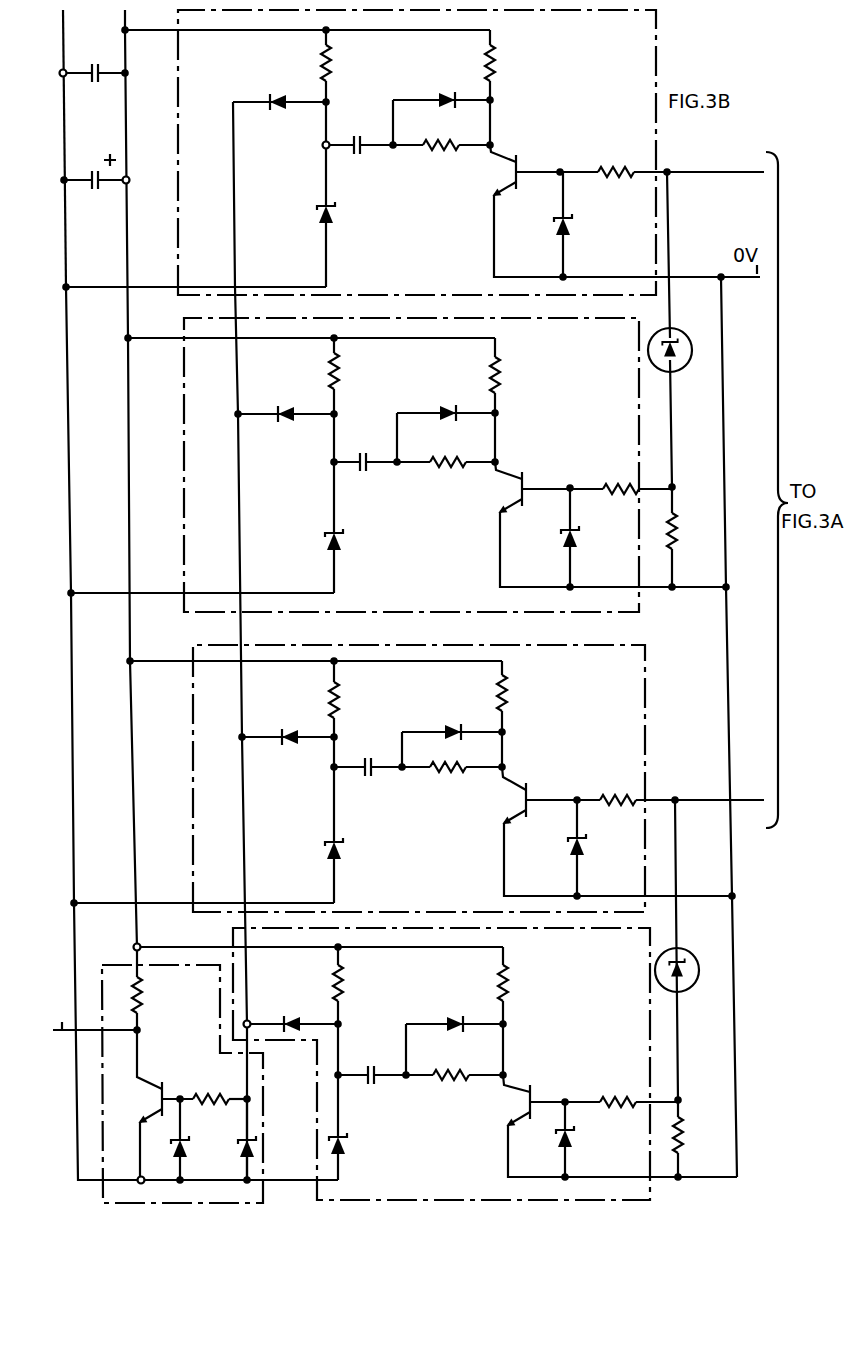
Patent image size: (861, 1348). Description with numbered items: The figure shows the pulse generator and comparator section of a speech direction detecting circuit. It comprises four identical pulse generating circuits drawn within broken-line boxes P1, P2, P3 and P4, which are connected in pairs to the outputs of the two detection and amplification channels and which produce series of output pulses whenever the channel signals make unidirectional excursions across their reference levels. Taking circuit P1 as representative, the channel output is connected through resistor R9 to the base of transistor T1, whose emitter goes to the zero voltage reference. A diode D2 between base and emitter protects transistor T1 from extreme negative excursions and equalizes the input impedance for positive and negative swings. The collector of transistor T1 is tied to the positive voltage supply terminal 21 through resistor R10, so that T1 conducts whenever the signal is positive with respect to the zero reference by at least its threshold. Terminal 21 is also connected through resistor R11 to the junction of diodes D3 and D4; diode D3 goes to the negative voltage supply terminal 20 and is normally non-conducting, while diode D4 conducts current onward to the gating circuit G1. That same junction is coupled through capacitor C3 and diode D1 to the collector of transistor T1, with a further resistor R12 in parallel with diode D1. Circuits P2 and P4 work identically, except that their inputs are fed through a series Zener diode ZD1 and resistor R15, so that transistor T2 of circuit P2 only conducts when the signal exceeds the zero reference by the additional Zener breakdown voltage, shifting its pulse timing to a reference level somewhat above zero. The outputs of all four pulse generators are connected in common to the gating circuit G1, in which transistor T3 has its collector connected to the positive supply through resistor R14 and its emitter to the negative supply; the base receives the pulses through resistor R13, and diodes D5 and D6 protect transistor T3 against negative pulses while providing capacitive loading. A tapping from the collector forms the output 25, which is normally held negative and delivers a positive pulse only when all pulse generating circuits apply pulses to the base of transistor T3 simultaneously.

The negative voltage supply terminal 20 is at (74, 146).
The positive voltage supply terminal 21 is at (142, 172).
The output 25 is at (92, 1015).
The pulse generating circuit P1 is at (658, 36).
The pulse generating circuit P2 is at (184, 400).
The pulse generating circuit P3 is at (193, 745).
The pulse generating circuit P4 is at (317, 1194).
The gating circuit G1 is at (112, 964).
The resistor R9 is at (662, 159).
The resistor R10 is at (513, 87).
The resistor R11 is at (347, 66).
The resistor R12 is at (441, 159).
The resistor R13 is at (220, 1088).
The resistor R14 is at (143, 990).
The resistor R15 is at (696, 537).
The capacitor C3 is at (358, 134).
The diode D1 is at (443, 87).
The diode D2 is at (576, 224).
The diode D3 is at (312, 194).
The diode D4 is at (279, 91).
The diode D5 is at (194, 1139).
The diode D6 is at (242, 1148).
The transistor T1 is at (525, 169).
The transistor T2 is at (583, 482).
The transistor T3 is at (152, 1076).
The Zener diode ZD1 is at (684, 360).